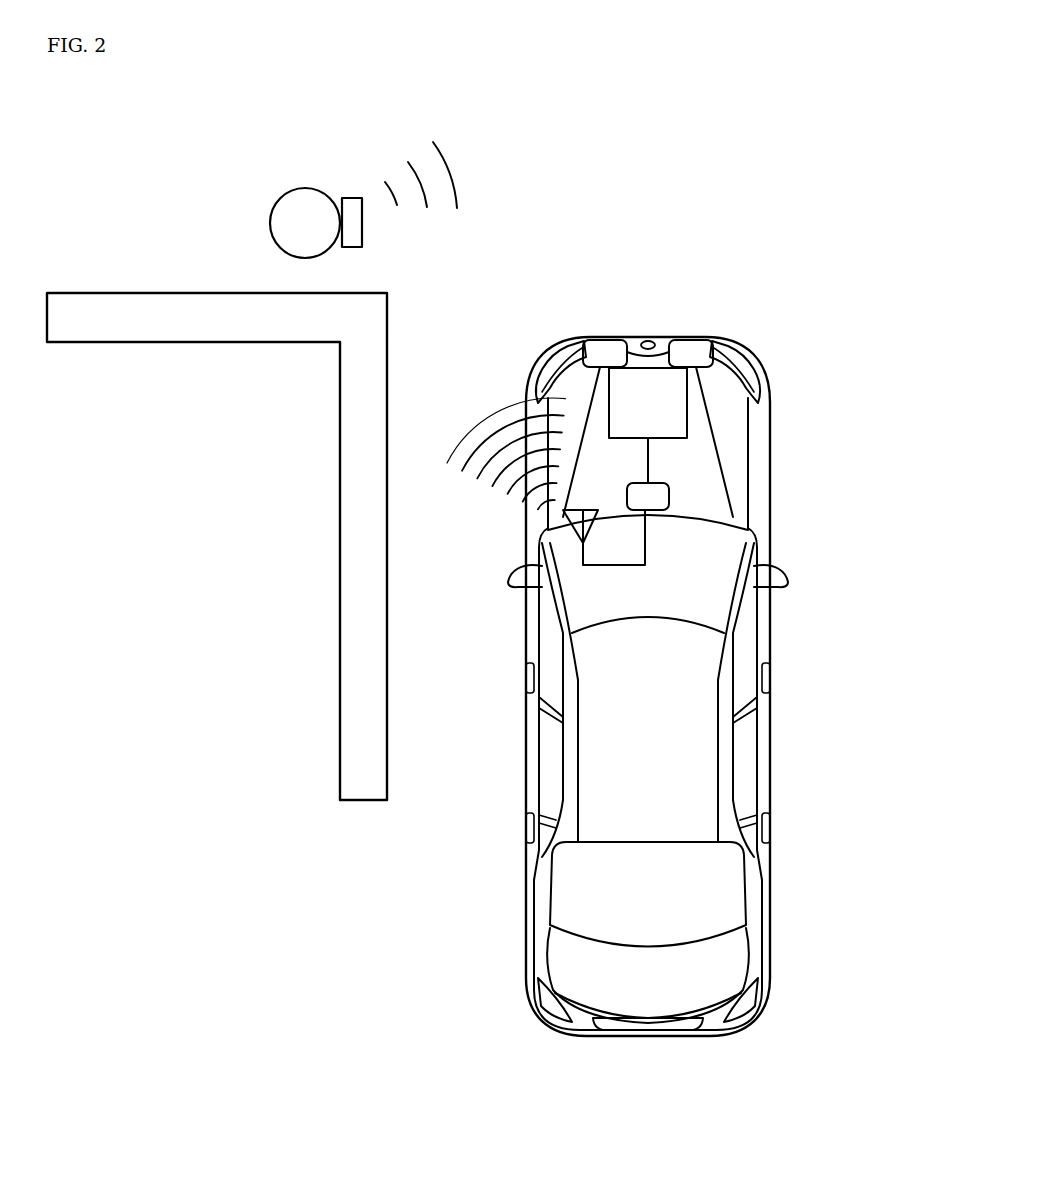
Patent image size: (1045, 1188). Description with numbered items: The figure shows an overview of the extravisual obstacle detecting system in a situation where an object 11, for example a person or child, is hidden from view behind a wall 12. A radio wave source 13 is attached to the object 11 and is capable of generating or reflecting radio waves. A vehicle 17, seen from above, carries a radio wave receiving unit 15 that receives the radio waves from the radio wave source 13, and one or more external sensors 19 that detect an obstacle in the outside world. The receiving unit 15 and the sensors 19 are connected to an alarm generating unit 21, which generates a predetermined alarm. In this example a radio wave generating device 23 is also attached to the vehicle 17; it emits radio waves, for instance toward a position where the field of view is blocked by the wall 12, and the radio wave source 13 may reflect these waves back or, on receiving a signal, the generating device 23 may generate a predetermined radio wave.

The object 11 is at (288, 203).
The wall 12 is at (80, 324).
The radio wave source 13 is at (350, 198).
The radio wave receiving unit 15 is at (607, 345).
The vehicle 17 is at (695, 657).
The external sensor 19 is at (685, 348).
The alarm generating unit 21 is at (657, 495).
The radio wave generating device 23 is at (577, 528).